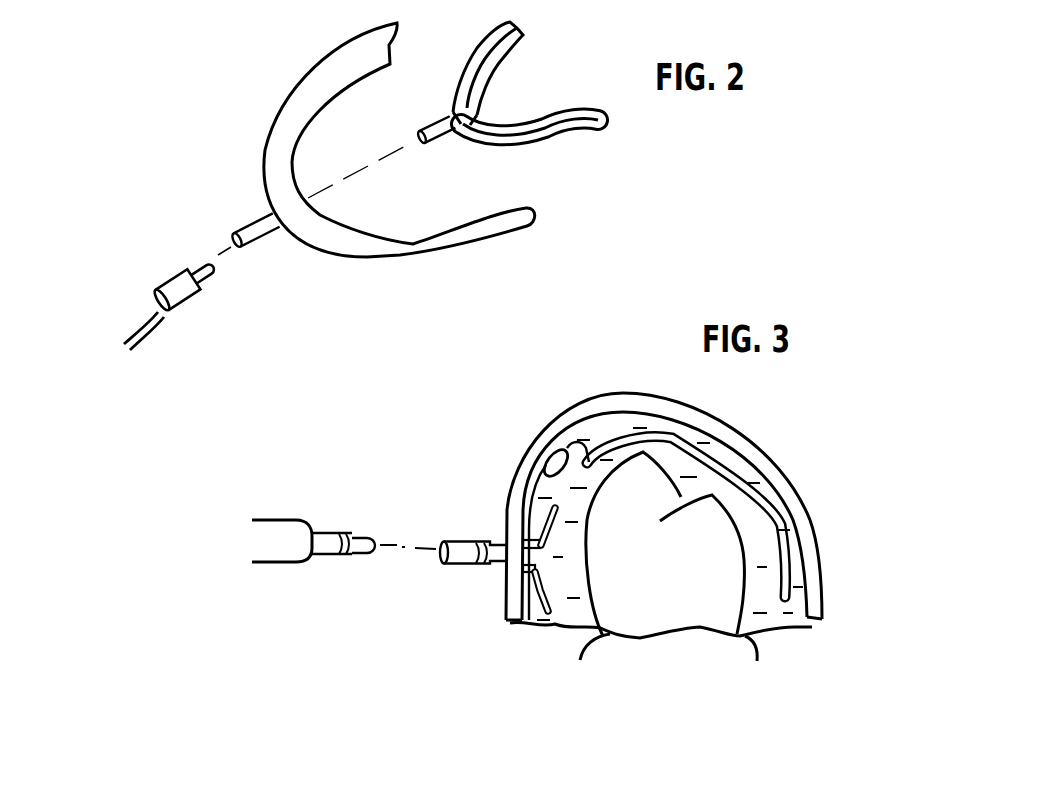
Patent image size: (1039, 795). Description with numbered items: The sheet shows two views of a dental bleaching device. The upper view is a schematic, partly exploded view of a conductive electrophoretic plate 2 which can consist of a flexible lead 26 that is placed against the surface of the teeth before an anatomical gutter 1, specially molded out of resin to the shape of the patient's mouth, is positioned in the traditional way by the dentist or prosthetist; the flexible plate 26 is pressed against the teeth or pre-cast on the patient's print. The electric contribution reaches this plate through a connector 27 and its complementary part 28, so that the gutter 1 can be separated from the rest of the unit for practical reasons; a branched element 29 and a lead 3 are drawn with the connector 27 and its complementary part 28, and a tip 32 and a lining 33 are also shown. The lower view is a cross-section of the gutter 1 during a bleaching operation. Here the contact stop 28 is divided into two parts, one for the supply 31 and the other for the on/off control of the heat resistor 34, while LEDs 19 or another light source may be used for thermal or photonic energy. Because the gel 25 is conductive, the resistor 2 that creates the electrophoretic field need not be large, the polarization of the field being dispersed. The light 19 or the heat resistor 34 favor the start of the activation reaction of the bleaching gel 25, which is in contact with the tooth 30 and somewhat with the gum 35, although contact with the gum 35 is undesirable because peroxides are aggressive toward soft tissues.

In FIG. 3, the gutter 1 is at (512, 592).
In FIG. 3, the conductive electrophoretic plate 2 is at (538, 618).
In FIG. 2, the cable 3 is at (133, 331).
In FIG. 3, the LEDs 19 is at (551, 460).
In FIG. 3, the gel 25 is at (573, 608).
In FIG. 2, the flexible lead 26 is at (331, 238).
In FIG. 2, the connector 27 is at (253, 233).
In FIG. 3, the connector 27 is at (459, 556).
In FIG. 2, the complementary part 28 is at (176, 283).
In FIG. 3, the complementary part 28 is at (280, 537).
In FIG. 2, the branched tubing 29 is at (517, 137).
In FIG. 3, the tooth 30 is at (712, 532).
In FIG. 3, the supply 31 is at (343, 536).
In FIG. 3, the plug tip 32 is at (368, 540).
In FIG. 3, the lining 33 is at (526, 490).
In FIG. 3, the heat resistor 34 is at (609, 442).
In FIG. 3, the gum 35 is at (724, 660).